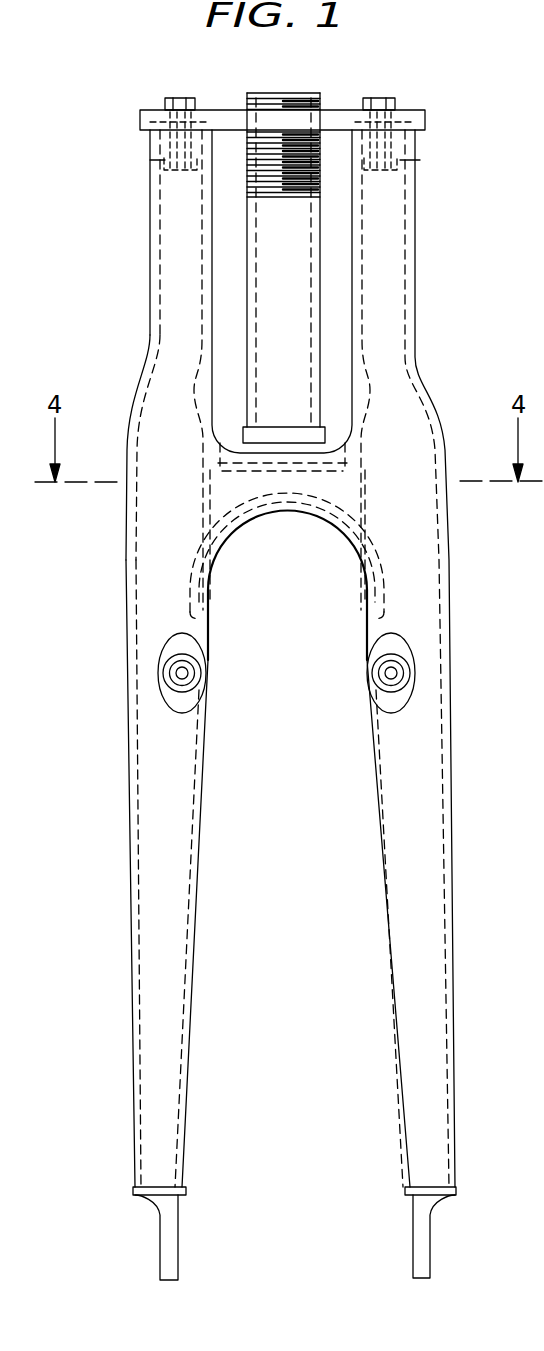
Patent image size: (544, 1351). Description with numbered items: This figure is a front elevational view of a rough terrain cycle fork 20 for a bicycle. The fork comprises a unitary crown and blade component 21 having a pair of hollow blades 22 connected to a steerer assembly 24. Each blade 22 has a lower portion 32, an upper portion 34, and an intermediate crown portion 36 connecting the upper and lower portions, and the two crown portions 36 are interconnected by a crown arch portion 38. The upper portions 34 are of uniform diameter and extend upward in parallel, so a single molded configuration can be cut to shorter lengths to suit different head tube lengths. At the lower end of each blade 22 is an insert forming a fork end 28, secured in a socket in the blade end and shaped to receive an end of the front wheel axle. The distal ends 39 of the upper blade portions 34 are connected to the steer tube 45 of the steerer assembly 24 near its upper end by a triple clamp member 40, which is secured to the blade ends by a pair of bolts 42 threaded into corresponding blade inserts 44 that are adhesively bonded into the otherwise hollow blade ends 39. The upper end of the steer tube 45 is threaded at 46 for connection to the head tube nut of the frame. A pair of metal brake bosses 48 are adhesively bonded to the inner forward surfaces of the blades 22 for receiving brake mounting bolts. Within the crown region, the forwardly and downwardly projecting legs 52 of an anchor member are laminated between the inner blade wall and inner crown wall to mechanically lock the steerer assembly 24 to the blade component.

The rough terrain cycle fork 20 is at (502, 58).
The unitary crown and blade component 21 is at (532, 312).
The hollow blades 22 is at (300, 888).
The steerer assembly 24 is at (110, 297).
The fork ends 28 is at (180, 1240).
The lower portion 32 is at (455, 850).
The upper portion 34 is at (321, 370).
The intermediate crown portion 36 is at (125, 517).
The crown arch portion 38 is at (285, 482).
The distal ends 39 is at (266, 145).
The triple clamp member 40 is at (72, 119).
The bolts 42 is at (172, 97).
The blade inserts 44 is at (147, 155).
The steer tube 45 is at (315, 253).
The threads 46 is at (318, 108).
The brake bosses 48 is at (208, 666).
The legs 52 is at (448, 573).